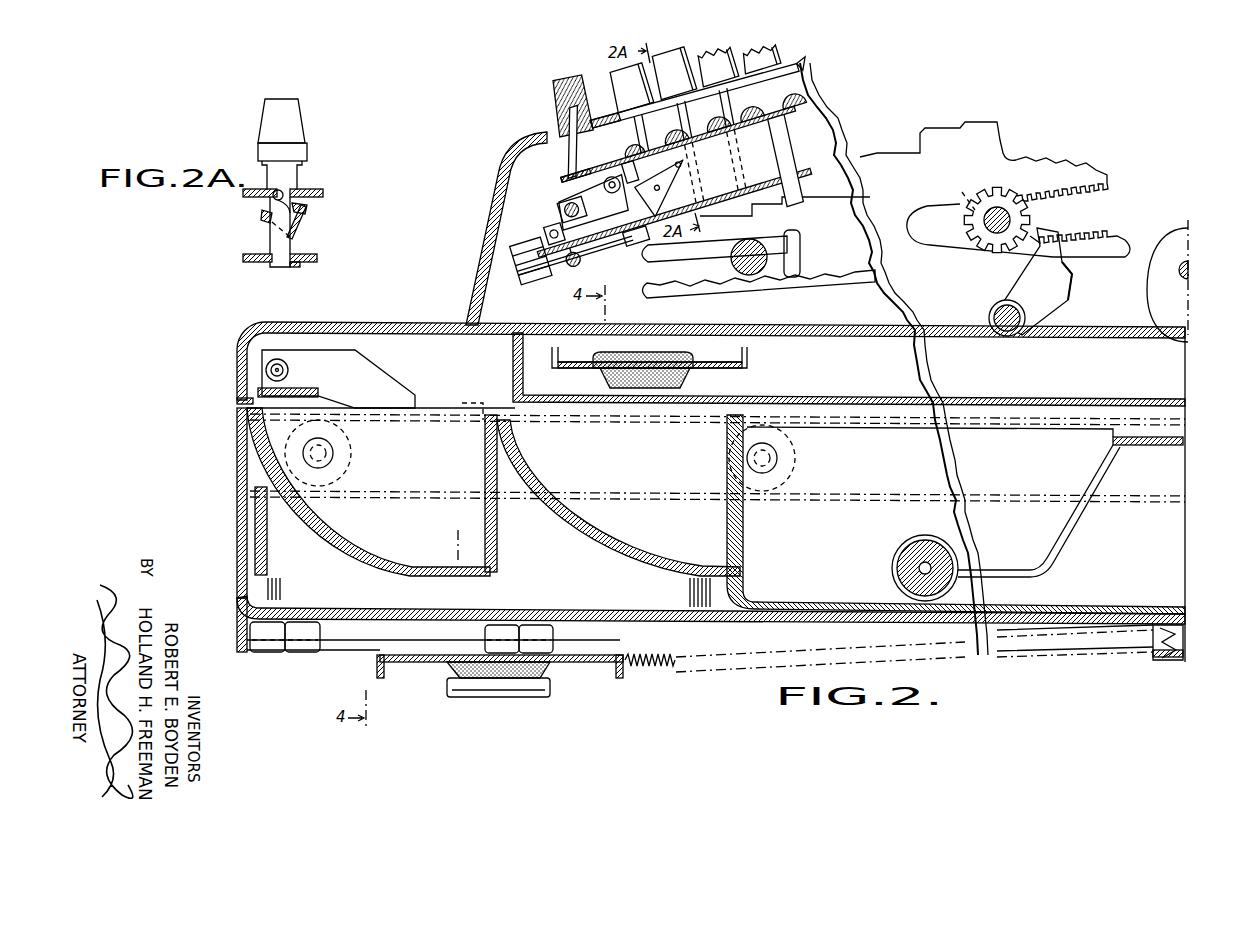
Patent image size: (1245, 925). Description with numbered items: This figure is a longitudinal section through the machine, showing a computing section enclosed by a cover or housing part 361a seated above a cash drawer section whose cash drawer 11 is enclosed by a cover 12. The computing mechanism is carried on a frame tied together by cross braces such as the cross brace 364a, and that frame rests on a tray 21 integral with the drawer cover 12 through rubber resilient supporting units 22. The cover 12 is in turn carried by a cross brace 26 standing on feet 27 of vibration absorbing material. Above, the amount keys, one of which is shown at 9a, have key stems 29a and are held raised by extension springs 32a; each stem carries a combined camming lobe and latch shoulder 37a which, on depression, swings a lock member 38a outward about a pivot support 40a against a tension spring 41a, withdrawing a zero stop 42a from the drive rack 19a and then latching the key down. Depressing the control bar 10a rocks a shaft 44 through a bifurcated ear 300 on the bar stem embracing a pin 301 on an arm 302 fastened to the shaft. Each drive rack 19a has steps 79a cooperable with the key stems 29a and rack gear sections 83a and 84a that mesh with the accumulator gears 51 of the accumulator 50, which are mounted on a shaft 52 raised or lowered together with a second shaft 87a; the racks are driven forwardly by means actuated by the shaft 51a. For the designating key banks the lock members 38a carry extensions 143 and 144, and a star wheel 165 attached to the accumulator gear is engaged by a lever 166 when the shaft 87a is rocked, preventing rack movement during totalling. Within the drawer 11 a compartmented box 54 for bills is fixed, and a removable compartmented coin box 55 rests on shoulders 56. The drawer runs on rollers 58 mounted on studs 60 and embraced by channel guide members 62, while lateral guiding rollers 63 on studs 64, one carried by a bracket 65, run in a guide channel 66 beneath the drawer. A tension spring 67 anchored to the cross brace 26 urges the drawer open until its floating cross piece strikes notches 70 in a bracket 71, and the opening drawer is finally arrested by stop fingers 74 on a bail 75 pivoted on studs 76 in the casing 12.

In FIG. 2A, the key knob 9a is at (302, 136).
In FIG. 2, the key knob 9a is at (616, 74).
In FIG. 2, the control bar 10a is at (560, 84).
In FIG. 2, the cash drawer 11 is at (228, 508).
In FIG. 2, the cover 12 is at (337, 322).
In FIG. 2, the drive rack 19a is at (858, 285).
In FIG. 2, the tray 21 is at (838, 395).
In FIG. 2, the resilient supporting unit 22 is at (679, 356).
In FIG. 2, the cross brace 26 is at (619, 678).
In FIG. 2, the feet 27 is at (552, 680).
In FIG. 2, the key stem 29a is at (651, 137).
In FIG. 2A, the extension spring 32a is at (273, 200).
In FIG. 2, the extension spring 32a is at (806, 103).
In FIG. 2A, the combined camming lobe and latch shoulder 37a is at (281, 236).
In FIG. 2A, the lock member 38a is at (300, 225).
In FIG. 2, the lock member 38a is at (852, 150).
In FIG. 2A, the pivot support 40a is at (306, 209).
In FIG. 2, the pivot support 40a is at (636, 160).
In FIG. 2A, the tension spring 41a is at (262, 215).
In FIG. 2, the zero stop 42a is at (793, 190).
In FIG. 2, the shaft 44 is at (566, 196).
In FIG. 2, the accumulator 50 is at (1032, 212).
In FIG. 2, the accumulator gear 51 is at (1005, 190).
In FIG. 2, the shaft 51a is at (1190, 275).
In FIG. 2, the shaft 52 is at (990, 192).
In FIG. 2, the compartmented box 54 is at (956, 514).
In FIG. 2, the compartmented coin box 55 is at (493, 507).
In FIG. 2, the shoulders 56 is at (235, 596).
In FIG. 2, the rollers 58 is at (340, 455).
In FIG. 2, the studs 60 is at (304, 450).
In FIG. 2, the channel guide member 62 is at (655, 498).
In FIG. 2, the rollers 63 is at (312, 652).
In FIG. 2, the studs 64 is at (277, 652).
In FIG. 2, the bracket 65 is at (352, 655).
In FIG. 2, the guide channel 66 is at (718, 650).
In FIG. 2, the tension spring 67 is at (655, 672).
In FIG. 2, the notches 70 is at (1170, 661).
In FIG. 2, the bracket 71 is at (1152, 660).
In FIG. 2, the stop fingers 74 is at (392, 384).
In FIG. 2, the bail 75 is at (237, 401).
In FIG. 2, the studs 76 is at (266, 370).
In FIG. 2, the steps 79a is at (930, 133).
In FIG. 2, the rack gear section 83a is at (1109, 181).
In FIG. 2, the rack gear section 84a is at (1108, 231).
In FIG. 2, the shaft 87a is at (1000, 306).
In FIG. 2, the extension 143 is at (640, 250).
In FIG. 2, the extension 144 is at (596, 262).
In FIG. 2, the star wheel 165 is at (962, 222).
In FIG. 2, the lever 166 is at (1060, 296).
In FIG. 2, the bifurcated ear 300 is at (578, 152).
In FIG. 2, the pin 301 is at (614, 216).
In FIG. 2, the arm 302 is at (562, 180).
In FIG. 2, the cover or housing part 361a is at (480, 262).
In FIG. 2, the cross brace 364a is at (722, 366).